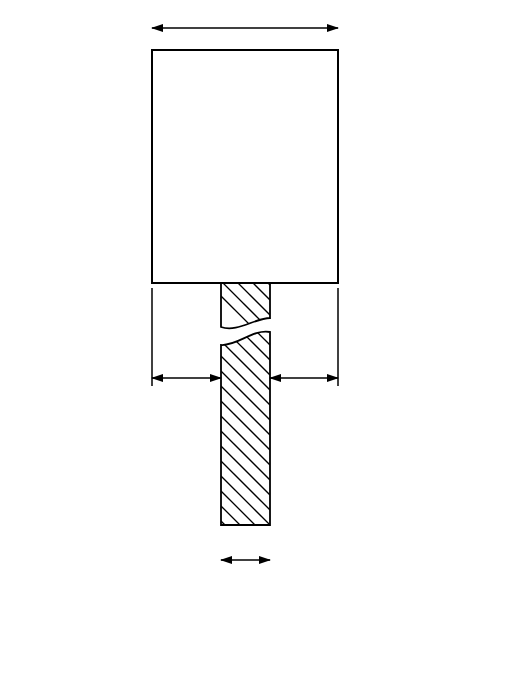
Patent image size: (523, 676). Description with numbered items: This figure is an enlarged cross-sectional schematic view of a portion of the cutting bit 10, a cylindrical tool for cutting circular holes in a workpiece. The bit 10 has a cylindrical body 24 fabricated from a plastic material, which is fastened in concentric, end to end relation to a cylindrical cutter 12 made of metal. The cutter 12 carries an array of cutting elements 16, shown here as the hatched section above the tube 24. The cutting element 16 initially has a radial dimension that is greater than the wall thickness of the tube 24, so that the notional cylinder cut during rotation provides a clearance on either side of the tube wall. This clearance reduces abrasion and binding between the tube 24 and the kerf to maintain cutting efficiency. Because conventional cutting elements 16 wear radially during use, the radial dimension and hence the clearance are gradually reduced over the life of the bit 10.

The cutting bit 10 is at (122, 462).
The cylindrical cutter 12 is at (310, 307).
The cutting element 16 is at (260, 172).
The cylindrical body 24 is at (258, 462).